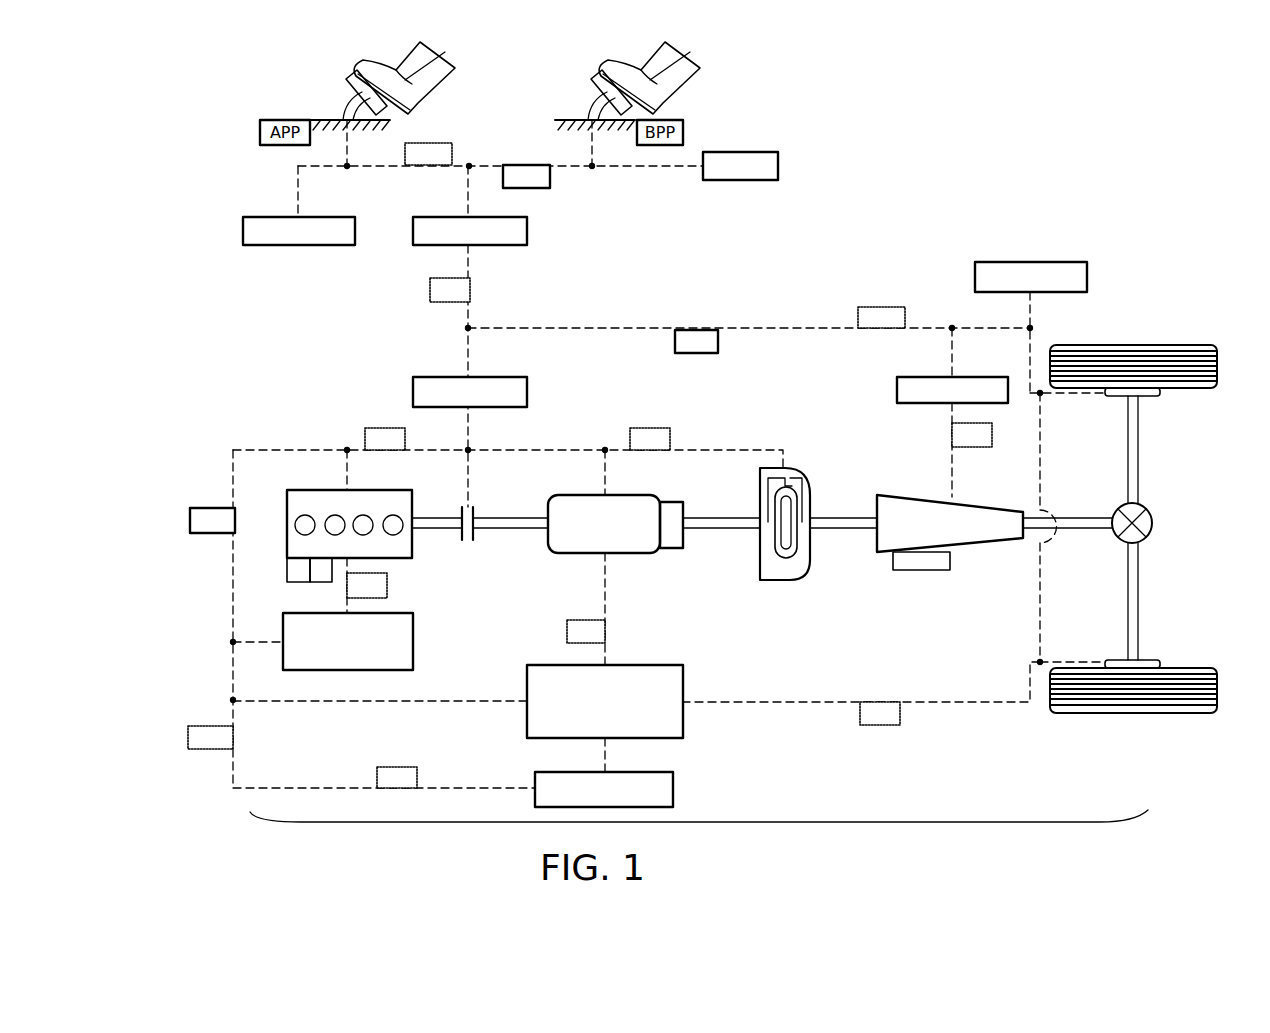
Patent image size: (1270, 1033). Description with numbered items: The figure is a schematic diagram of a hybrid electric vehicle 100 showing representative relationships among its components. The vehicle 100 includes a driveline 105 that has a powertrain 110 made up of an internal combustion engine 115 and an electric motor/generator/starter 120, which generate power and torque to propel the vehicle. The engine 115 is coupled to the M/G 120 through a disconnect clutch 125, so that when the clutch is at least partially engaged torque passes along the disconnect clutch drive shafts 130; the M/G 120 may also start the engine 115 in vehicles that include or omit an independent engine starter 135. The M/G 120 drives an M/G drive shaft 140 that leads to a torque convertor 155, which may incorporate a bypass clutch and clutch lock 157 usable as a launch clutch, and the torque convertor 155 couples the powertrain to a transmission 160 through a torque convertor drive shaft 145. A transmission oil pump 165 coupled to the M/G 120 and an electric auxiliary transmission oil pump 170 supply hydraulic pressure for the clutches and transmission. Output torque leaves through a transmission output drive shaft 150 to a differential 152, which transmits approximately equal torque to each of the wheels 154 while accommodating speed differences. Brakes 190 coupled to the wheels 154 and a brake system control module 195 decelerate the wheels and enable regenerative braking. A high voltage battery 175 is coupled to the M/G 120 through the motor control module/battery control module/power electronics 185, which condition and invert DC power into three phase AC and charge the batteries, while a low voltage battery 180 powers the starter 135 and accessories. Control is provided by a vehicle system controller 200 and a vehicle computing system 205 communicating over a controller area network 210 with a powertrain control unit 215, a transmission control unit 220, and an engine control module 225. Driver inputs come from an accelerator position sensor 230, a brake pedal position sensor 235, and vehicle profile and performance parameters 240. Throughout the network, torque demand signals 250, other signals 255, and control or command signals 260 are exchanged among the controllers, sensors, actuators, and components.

The hybrid electric vehicle 100 is at (943, 173).
The driveline 105 is at (765, 822).
The powertrain 110 is at (700, 620).
The internal combustion engine 115 is at (410, 556).
The electric motor/generator/starter 120 is at (615, 556).
The disconnect clutch 125 is at (475, 540).
The disconnect clutch drive shafts 130 is at (448, 515).
The engine starter 135 is at (290, 584).
The M/G drive shaft 140 is at (735, 515).
The torque convertor drive shaft 145 is at (848, 518).
The transmission output drive shaft 150 is at (1065, 530).
The differential 152 is at (1152, 515).
The wheels 154 is at (1175, 390).
The torque convertor 155 is at (810, 565).
The bypass clutch and clutch lock 157 is at (800, 500).
The transmission 160 is at (975, 545).
The transmission oil pump 165 is at (683, 548).
The electric auxiliary transmission oil pump 170 is at (915, 572).
The high voltage battery 175 is at (673, 785).
The low voltage battery 180 is at (310, 583).
The motor control module/battery control module/power electronics 185 is at (683, 712).
The brakes 190 is at (1112, 397).
The brake system control module 195 is at (975, 272).
The vehicle system controller 200 is at (527, 240).
The vehicle computing system and controller 205 is at (298, 247).
The controller area network 210 is at (550, 185).
The powertrain control unit/module 215 is at (527, 395).
The transmission control unit 220 is at (930, 403).
The engine control module/engine control unit/energy management system 225 is at (413, 665).
The accelerator position and motion sensor 230 is at (345, 104).
The brake pedal position and motion sensor 235 is at (590, 104).
The vehicle profile and performance parameters 240 is at (778, 175).
The torque demand signals 250 is at (420, 170).
The other signals 255 is at (430, 290).
The control or command signals 260 is at (375, 428).